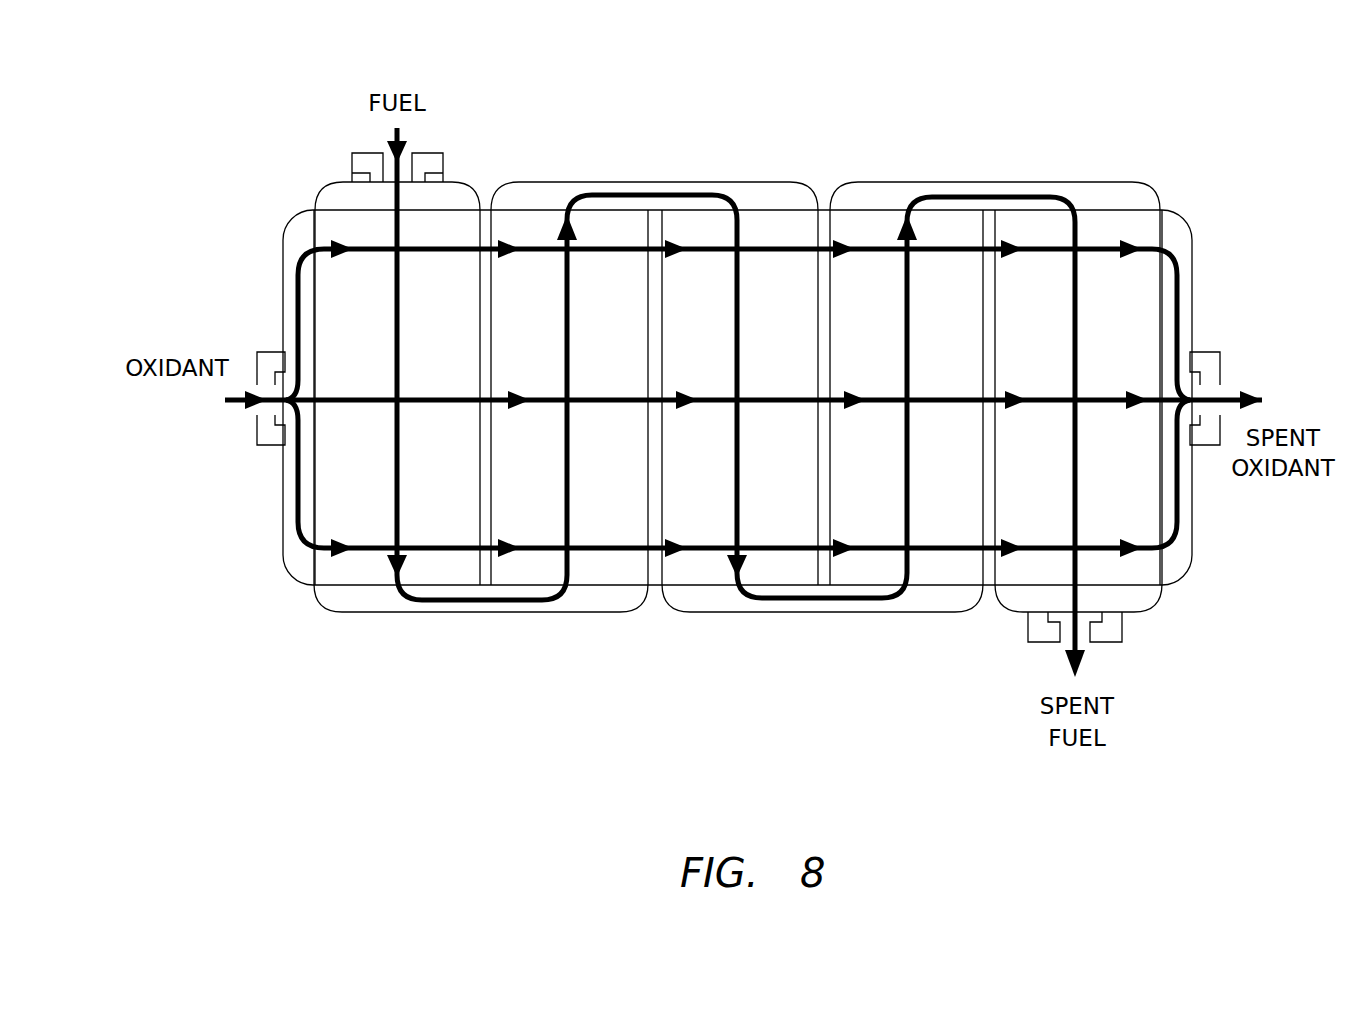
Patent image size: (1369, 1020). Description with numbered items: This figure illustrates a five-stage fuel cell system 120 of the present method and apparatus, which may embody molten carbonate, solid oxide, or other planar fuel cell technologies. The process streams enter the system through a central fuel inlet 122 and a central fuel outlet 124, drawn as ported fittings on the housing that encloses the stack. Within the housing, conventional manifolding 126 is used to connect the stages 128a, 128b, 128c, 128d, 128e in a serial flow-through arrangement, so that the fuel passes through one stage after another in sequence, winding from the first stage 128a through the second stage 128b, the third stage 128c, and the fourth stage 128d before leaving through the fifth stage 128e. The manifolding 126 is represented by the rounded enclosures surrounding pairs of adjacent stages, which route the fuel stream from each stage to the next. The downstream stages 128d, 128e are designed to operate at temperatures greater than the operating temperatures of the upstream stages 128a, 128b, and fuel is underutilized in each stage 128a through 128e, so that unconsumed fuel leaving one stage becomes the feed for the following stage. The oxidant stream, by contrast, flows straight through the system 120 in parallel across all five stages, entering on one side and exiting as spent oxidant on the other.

The five-stage fuel cell system 120 is at (1228, 120).
The central fuel inlet 122 is at (451, 117).
The central fuel outlet 124 is at (215, 446).
The conventional manifolding 126 is at (738, 398).
The first stage 128a is at (381, 442).
The second stage 128b is at (553, 476).
The third stage 128c is at (759, 317).
The fourth stage 128d is at (882, 477).
The fifth stage 128e is at (1096, 356).